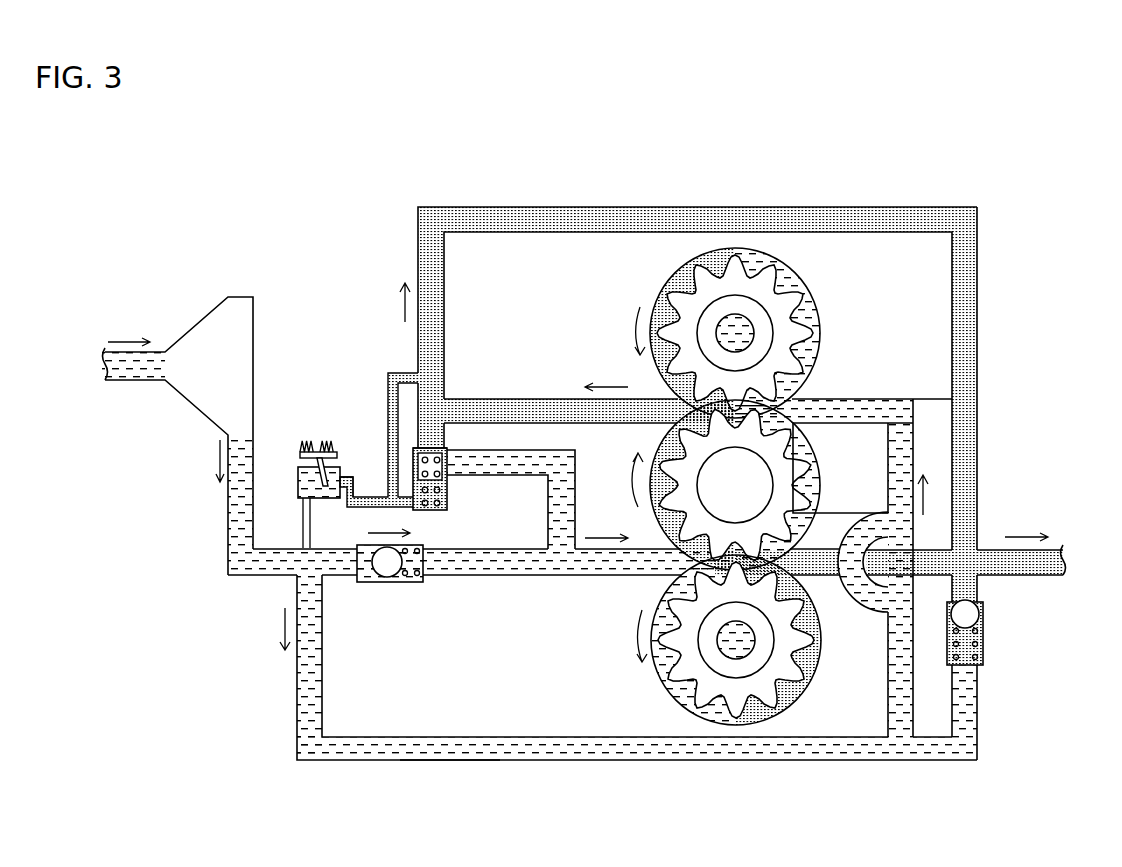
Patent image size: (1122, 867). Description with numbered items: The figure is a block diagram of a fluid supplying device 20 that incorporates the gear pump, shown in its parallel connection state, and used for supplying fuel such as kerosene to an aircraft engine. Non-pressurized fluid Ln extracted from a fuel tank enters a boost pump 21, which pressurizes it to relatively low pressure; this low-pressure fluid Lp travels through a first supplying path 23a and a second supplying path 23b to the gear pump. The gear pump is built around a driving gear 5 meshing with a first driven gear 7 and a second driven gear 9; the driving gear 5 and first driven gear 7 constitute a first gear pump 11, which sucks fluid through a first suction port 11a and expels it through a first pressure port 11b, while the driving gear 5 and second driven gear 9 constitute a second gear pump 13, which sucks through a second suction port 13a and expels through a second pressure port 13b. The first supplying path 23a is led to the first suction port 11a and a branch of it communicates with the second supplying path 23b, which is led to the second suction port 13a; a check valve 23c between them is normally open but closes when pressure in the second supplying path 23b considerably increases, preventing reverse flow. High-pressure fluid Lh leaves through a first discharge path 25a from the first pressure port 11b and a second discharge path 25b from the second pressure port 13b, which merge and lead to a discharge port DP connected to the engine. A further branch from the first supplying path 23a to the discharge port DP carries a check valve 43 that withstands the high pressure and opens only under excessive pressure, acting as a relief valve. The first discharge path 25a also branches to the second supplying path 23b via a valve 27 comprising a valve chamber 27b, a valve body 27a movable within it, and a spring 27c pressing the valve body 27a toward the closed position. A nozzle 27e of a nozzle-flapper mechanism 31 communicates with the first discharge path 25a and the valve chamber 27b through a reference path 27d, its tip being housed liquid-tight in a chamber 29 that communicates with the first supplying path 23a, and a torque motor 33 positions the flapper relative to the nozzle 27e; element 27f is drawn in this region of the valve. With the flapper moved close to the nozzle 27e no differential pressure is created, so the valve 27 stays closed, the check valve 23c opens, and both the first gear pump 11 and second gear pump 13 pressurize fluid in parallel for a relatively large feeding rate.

The fluid supplying device 20 is at (476, 152).
The boost pump 21 is at (240, 297).
The first discharge path 25a is at (636, 207).
The second discharge path 25b is at (930, 552).
The first supplying path 23a is at (297, 682).
The second supplying path 23b is at (470, 583).
The check valve 23c is at (388, 583).
The valve 27 is at (402, 512).
The valve body 27a is at (447, 444).
The valve chamber 27b is at (433, 512).
The spring 27c is at (450, 504).
The reference path 27d is at (388, 396).
The nozzle 27e is at (303, 503).
The pilot chamber 27f is at (365, 478).
The chamber 29 is at (300, 478).
The nozzle-flapper mechanism 31 is at (315, 426).
The torque motor 33 is at (304, 442).
The driving gear 5 is at (820, 447).
The first driven gear 7 is at (813, 316).
The second driven gear 9 is at (817, 667).
The first gear pump 11 is at (836, 371).
The first suction port 11a is at (800, 395).
The first pressure port 11b is at (668, 393).
The second gear pump 13 is at (657, 540).
The second suction port 13a is at (676, 578).
The second pressure port 13b is at (793, 577).
The check valve 43 is at (983, 642).
The non-pressurized fluid Ln is at (132, 378).
The high-pressure fluid Lh is at (735, 220).
The low-pressure fluid Lp is at (450, 761).
The discharge port DP is at (984, 560).